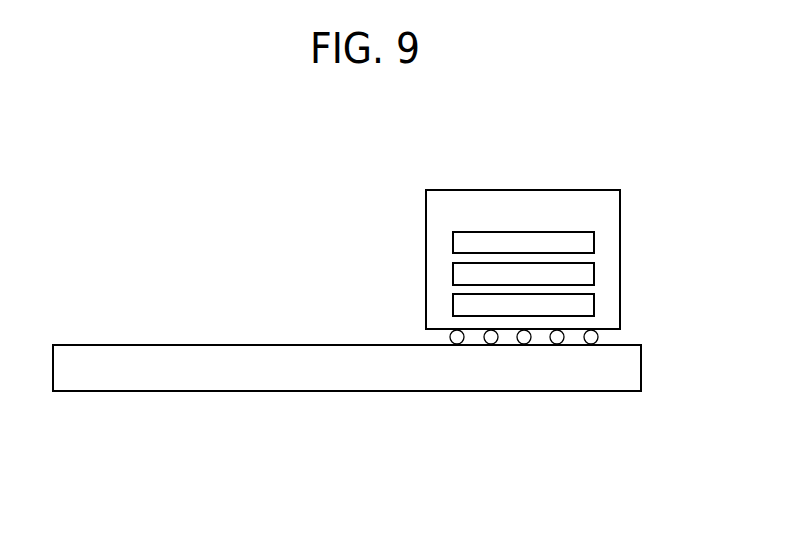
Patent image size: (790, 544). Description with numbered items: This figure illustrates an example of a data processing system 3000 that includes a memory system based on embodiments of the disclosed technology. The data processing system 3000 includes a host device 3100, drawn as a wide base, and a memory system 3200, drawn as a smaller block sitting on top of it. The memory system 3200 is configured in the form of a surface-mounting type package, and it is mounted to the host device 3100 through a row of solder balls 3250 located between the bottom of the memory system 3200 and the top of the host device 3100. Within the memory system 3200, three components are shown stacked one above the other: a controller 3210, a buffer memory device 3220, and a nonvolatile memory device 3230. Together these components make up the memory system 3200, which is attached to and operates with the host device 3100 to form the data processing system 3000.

The data processing system 3000 is at (187, 165).
The host device 3100 is at (347, 368).
The memory system 3200 is at (523, 259).
The controller 3210 is at (523, 243).
The buffer memory device 3220 is at (523, 275).
The nonvolatile memory device 3230 is at (523, 306).
The solder balls 3250 is at (602, 340).